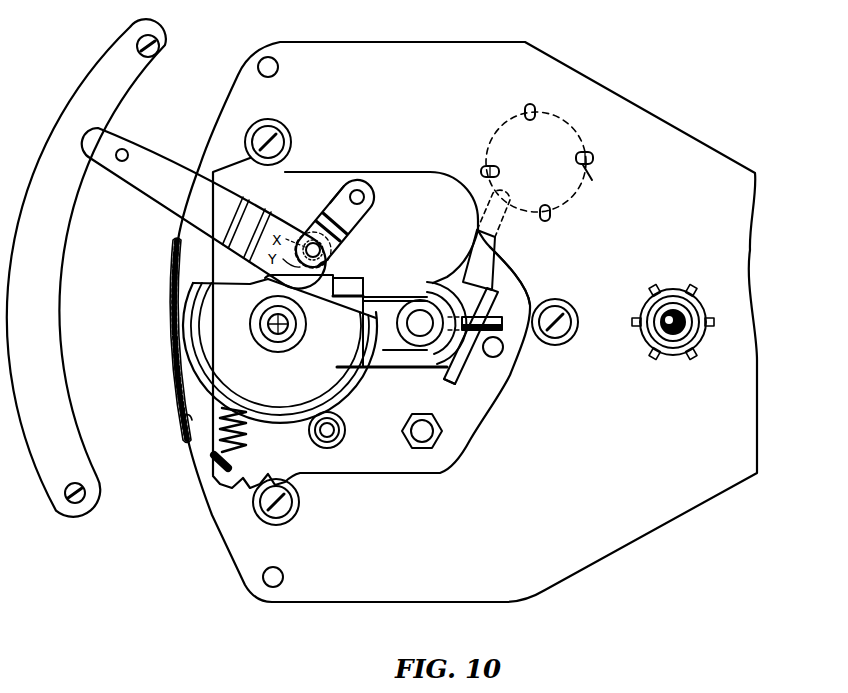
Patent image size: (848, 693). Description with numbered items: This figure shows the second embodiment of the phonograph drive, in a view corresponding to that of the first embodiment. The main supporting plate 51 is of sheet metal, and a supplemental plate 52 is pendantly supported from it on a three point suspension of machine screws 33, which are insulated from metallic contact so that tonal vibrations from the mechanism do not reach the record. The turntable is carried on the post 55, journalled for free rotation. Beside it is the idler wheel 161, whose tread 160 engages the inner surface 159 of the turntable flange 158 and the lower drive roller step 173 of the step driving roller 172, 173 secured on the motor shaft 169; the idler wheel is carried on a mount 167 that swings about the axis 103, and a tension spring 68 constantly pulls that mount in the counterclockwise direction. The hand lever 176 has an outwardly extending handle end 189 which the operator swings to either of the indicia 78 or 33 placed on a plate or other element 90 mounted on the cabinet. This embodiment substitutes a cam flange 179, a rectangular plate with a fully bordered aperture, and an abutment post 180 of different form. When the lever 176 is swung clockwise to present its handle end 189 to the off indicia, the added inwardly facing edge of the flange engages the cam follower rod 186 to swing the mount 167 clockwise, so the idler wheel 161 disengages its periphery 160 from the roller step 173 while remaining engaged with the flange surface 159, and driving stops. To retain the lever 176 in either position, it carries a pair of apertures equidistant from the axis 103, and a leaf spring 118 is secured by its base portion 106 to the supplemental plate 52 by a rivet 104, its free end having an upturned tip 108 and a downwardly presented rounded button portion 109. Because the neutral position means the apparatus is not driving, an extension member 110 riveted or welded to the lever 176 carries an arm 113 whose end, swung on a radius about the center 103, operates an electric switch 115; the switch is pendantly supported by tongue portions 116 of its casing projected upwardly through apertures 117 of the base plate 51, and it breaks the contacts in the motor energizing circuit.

The main supporting plate 51 is at (422, 57).
The supplemental plate 52 is at (411, 188).
The post 55 is at (670, 316).
The tension spring 68 is at (241, 441).
The plate or other element 90 is at (56, 283).
The axis 103 is at (420, 317).
The rivet 104 is at (360, 192).
The base portion 106 is at (365, 218).
The upturned tip 108 is at (337, 256).
The rounded button portion 109 is at (314, 243).
The extension member 110 is at (463, 293).
The arm 113 is at (482, 253).
The electric switch 115 is at (580, 131).
The tongue portions 116 is at (586, 176).
The apertures 117 is at (597, 161).
The leaf spring 118 is at (337, 192).
The turntable flange 158 is at (170, 357).
The inner surface 159 is at (186, 417).
The tread 160 is at (200, 380).
The idler wheel 161 is at (280, 351).
The idler wheel mount 167 is at (395, 333).
The shaft 169 is at (331, 443).
The step driving roller 172 is at (340, 431).
The lower drive roller step 173 is at (340, 421).
The hand lever 176 is at (164, 212).
The cam flange 179 is at (457, 382).
The abutment post 180 is at (500, 353).
The cam follower rod 186 is at (522, 281).
The handle end 189 is at (110, 133).
The indicia 78 is at (76, 131).
The indicia 33 is at (50, 449).